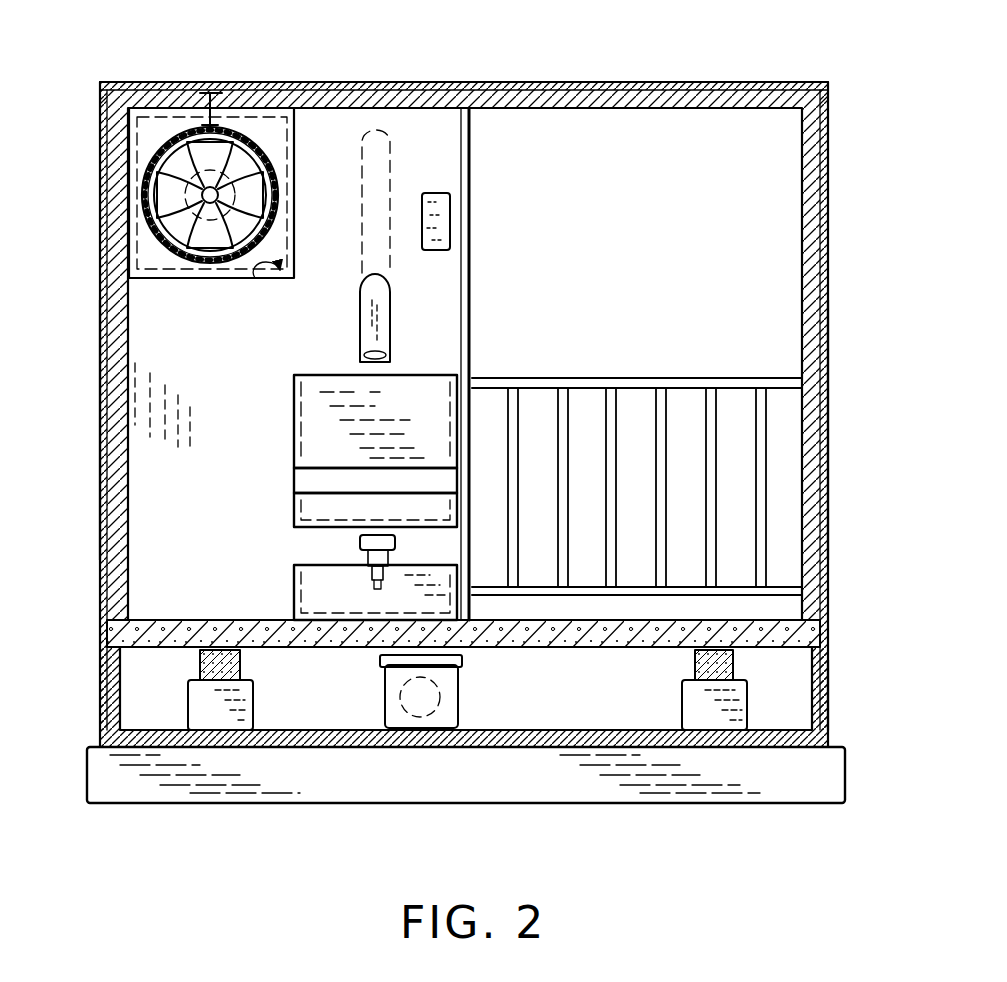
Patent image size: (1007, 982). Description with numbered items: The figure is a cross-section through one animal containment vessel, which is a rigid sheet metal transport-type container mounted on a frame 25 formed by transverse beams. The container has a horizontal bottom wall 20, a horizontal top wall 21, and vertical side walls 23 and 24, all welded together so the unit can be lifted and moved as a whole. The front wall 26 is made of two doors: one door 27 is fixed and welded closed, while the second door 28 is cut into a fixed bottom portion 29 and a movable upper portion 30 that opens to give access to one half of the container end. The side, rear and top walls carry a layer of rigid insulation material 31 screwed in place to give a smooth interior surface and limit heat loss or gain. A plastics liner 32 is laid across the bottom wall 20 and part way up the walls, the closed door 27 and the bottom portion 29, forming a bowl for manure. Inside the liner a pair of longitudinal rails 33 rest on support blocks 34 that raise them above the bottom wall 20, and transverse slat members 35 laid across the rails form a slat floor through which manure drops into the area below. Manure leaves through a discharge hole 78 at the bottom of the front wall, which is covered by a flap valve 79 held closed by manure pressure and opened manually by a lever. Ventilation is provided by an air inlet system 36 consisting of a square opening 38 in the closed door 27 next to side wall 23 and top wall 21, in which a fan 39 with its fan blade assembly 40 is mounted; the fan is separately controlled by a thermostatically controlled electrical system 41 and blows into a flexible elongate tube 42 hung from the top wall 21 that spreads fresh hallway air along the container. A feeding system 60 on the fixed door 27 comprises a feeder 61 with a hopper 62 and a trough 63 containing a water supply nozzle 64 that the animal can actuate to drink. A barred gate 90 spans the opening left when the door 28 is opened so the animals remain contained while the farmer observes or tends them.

The bottom wall 20 is at (436, 748).
The top wall 21 is at (488, 78).
The side wall 23 is at (100, 400).
The side wall 24 is at (828, 405).
The frame 25 is at (528, 803).
The front wall 26 is at (566, 135).
The fixed door 27 is at (418, 125).
The second door 28 is at (639, 128).
The bottom portion 29 is at (507, 688).
The upper portion 30 is at (782, 239).
The rigid insulation material 31 is at (800, 174).
The plastics liner 32 is at (833, 705).
The longitudinal rails 33 is at (200, 662).
The support blocks 34 is at (196, 702).
The transverse slat members 35 is at (208, 616).
The air inlet system 36 is at (239, 179).
The opening 38 is at (254, 278).
The fan 39 is at (236, 216).
The fan blade assembly 40 is at (207, 240).
The thermostatically controlled electrical system 41 is at (449, 197).
The elongate tube 42 is at (285, 140).
The feeding system 60 is at (280, 434).
The feeder 61 is at (354, 480).
The hopper 62 is at (430, 385).
The trough 63 is at (317, 580).
The water supply nozzle 64 is at (352, 546).
The discharge hole 78 is at (460, 692).
The flap valve 79 is at (385, 677).
The barred gate 90 is at (614, 375).